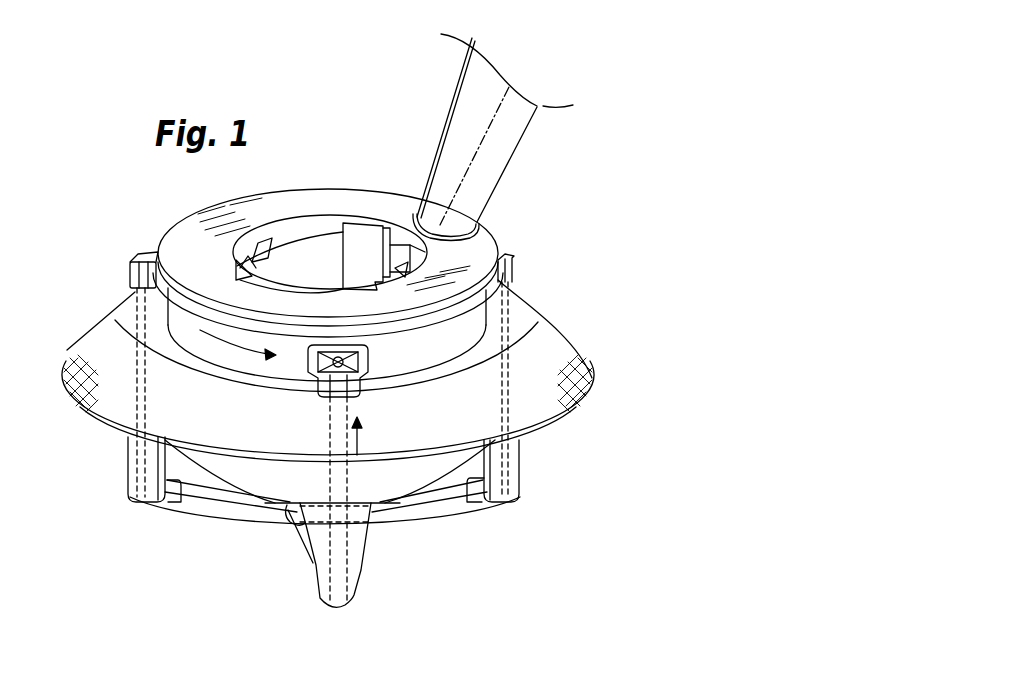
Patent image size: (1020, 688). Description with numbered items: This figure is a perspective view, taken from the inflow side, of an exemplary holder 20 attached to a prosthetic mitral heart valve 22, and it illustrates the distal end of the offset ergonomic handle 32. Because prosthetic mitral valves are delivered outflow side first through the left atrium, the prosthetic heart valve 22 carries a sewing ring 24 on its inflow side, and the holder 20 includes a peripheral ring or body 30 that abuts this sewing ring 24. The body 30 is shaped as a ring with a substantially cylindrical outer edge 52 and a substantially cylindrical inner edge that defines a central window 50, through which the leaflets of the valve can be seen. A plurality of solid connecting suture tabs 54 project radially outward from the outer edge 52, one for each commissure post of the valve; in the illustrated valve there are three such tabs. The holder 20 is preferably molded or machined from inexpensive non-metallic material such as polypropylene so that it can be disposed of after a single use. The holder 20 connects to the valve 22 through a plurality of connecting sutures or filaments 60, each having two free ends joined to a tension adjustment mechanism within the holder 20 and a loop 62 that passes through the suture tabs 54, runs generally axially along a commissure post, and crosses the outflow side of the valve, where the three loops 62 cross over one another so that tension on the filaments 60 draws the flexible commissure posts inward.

The holder 20 is at (620, 230).
The prosthetic mitral heart valve 22 is at (622, 382).
The sewing ring 24 is at (68, 347).
The peripheral body 30 is at (158, 307).
The handle 32 is at (520, 172).
The central window 50 is at (293, 232).
The outer edge 52 is at (480, 318).
The suture tab 54 is at (135, 268).
The connecting filament 60 is at (327, 447).
The loop 62 is at (118, 488).